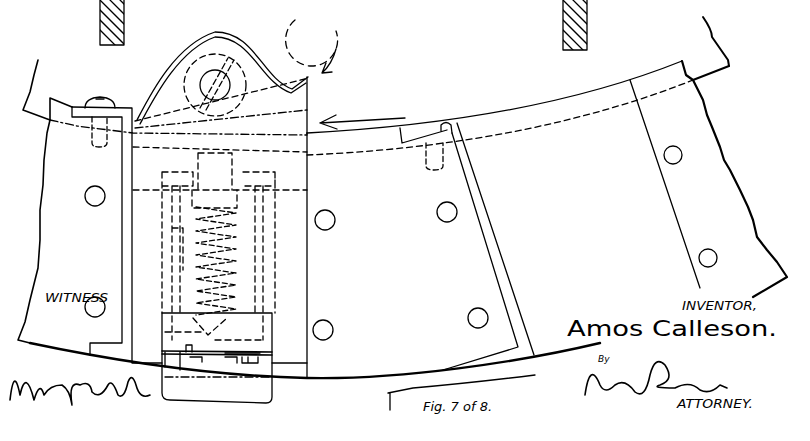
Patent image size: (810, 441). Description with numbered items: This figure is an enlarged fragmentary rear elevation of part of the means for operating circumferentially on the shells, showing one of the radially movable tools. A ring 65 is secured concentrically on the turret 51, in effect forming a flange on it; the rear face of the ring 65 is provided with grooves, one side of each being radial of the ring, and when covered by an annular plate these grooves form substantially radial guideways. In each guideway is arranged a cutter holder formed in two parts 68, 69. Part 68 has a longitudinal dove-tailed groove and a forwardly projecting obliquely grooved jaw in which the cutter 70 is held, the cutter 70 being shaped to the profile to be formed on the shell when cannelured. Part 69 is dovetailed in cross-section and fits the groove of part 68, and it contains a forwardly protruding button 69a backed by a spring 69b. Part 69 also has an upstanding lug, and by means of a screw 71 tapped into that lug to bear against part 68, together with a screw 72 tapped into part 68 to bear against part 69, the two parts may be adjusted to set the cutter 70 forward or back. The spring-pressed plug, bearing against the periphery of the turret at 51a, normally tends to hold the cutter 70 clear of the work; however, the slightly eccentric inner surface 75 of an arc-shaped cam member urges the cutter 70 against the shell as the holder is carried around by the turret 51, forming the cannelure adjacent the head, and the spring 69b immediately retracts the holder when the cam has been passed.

The turret 51 is at (704, 32).
The periphery of the turret 51a is at (718, 70).
The cutter 70 is at (308, 78).
The button 69a is at (178, 115).
The cutter holder part 68 is at (300, 181).
The ring 65 is at (547, 219).
The spring 69b is at (255, 275).
The screw 72 is at (177, 355).
The screw 71 is at (249, 364).
The cutter holder part 69 is at (274, 392).
The inner surface of cam member 75 is at (390, 388).